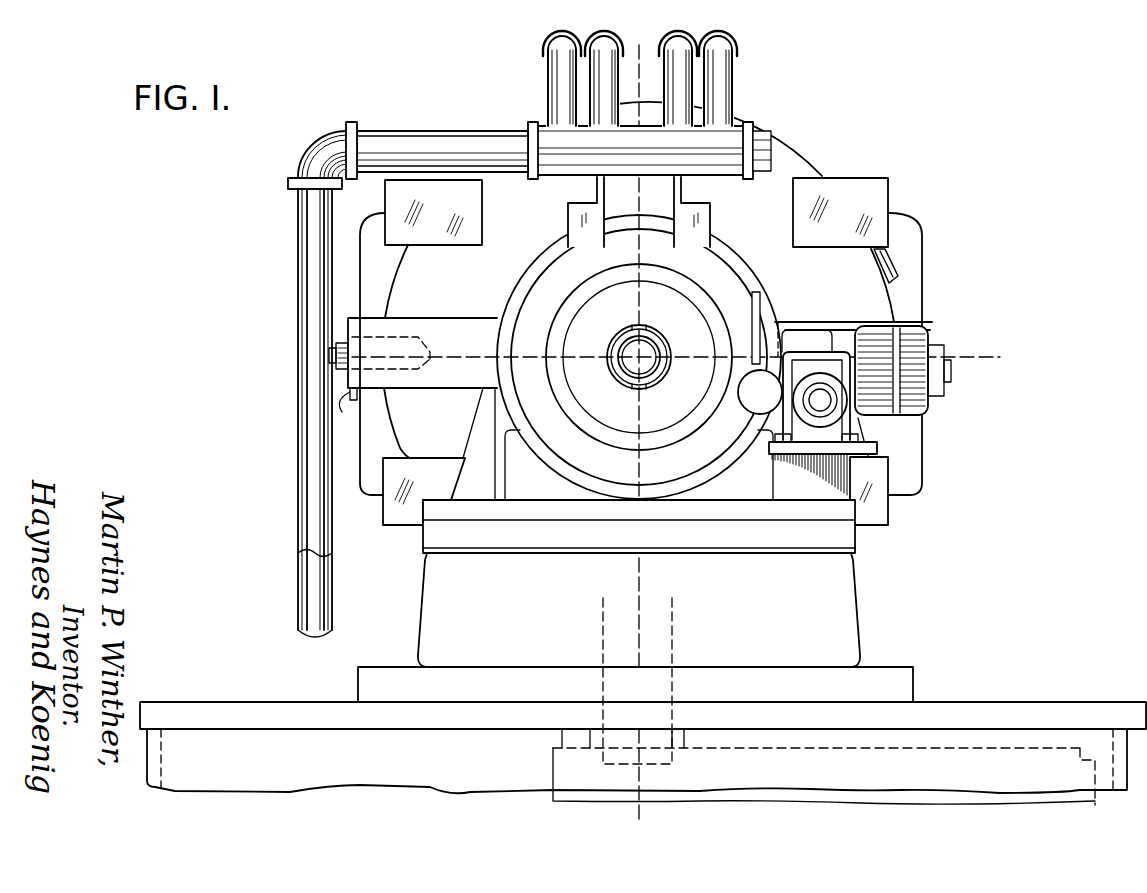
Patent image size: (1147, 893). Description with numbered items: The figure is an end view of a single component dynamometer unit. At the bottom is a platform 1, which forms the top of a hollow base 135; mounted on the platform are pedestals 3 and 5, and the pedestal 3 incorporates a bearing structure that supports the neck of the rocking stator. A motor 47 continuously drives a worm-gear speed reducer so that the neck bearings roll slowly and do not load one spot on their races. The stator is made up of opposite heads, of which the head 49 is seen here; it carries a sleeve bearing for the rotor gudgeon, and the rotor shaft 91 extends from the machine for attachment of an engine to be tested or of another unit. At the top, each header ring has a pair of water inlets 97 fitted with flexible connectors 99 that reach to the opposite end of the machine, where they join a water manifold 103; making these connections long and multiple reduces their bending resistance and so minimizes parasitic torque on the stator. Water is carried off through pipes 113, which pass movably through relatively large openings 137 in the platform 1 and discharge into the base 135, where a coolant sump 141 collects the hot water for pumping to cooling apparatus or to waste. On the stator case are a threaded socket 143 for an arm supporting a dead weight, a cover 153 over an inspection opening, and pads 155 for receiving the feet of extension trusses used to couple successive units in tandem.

The platform 1 is at (926, 712).
The pedestal 3 is at (856, 612).
The pedestal 5 is at (467, 340).
The motor 47 is at (922, 400).
The head 49 is at (509, 196).
The shaft 91 is at (645, 366).
The water inlets 97 is at (692, 90).
The flexible connectors 99 is at (690, 34).
The water manifold 103 is at (655, 118).
The pipes 113 is at (600, 692).
The hollow base 135 is at (1090, 728).
The openings 137 is at (684, 715).
The coolant sump 141 is at (784, 748).
The threaded socket 143 is at (352, 342).
The cover 153 is at (890, 260).
The pads 155 is at (882, 513).